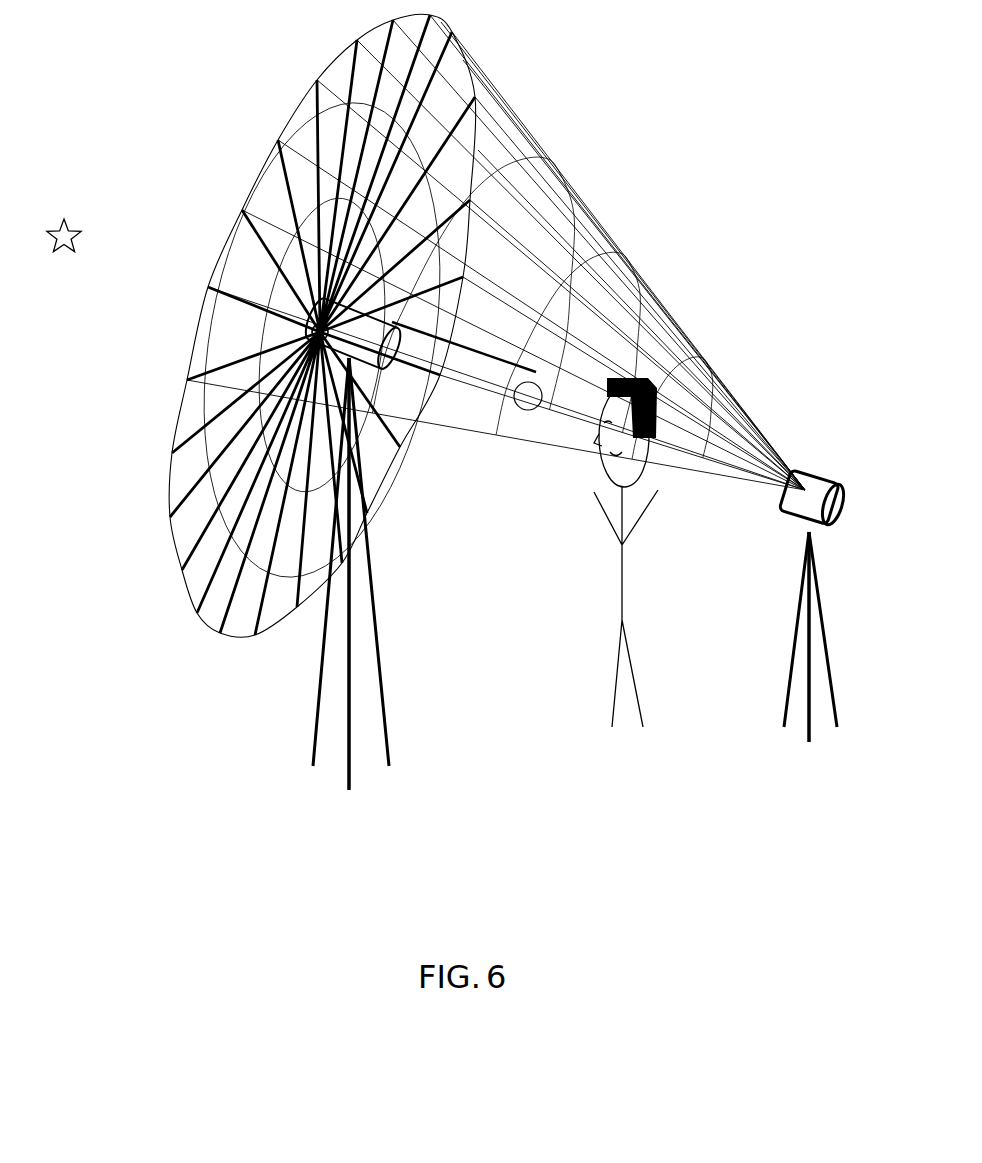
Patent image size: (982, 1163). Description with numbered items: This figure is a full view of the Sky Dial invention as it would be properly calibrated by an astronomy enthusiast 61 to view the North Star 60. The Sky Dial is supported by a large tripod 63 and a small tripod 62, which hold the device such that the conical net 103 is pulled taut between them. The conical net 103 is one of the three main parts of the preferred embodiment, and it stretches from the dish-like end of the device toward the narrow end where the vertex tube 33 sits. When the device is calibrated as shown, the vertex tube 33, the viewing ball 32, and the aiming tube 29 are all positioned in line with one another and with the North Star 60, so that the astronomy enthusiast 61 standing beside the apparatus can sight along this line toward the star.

The conical net 103 is at (645, 226).
The aiming tube 29 is at (388, 346).
The viewing ball 32 is at (520, 406).
The vertex tube 33 is at (822, 503).
The North Star 60 is at (78, 219).
The astronomy enthusiast 61 is at (622, 561).
The small tripod 62 is at (821, 612).
The large tripod 63 is at (318, 690).